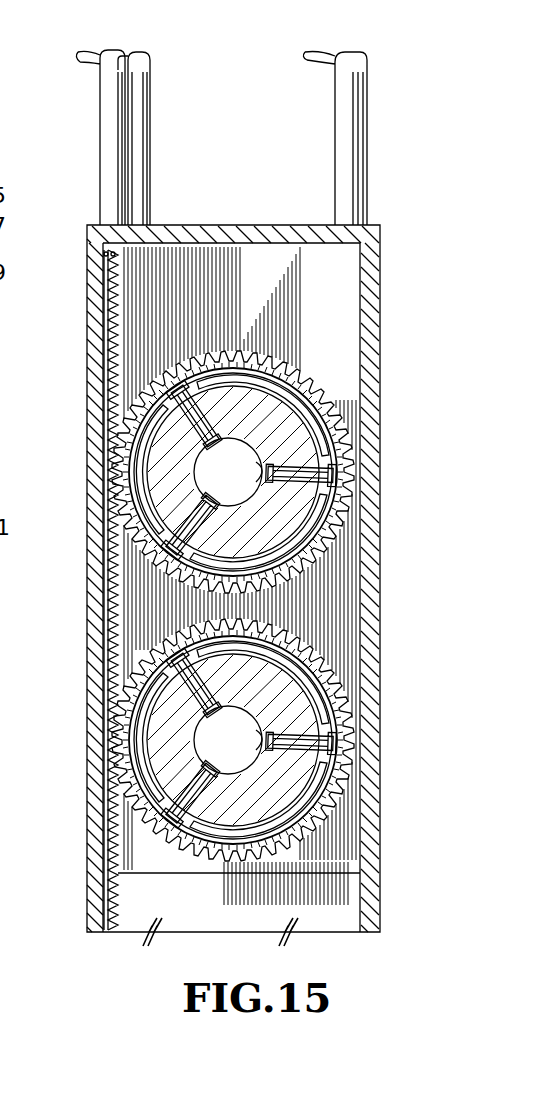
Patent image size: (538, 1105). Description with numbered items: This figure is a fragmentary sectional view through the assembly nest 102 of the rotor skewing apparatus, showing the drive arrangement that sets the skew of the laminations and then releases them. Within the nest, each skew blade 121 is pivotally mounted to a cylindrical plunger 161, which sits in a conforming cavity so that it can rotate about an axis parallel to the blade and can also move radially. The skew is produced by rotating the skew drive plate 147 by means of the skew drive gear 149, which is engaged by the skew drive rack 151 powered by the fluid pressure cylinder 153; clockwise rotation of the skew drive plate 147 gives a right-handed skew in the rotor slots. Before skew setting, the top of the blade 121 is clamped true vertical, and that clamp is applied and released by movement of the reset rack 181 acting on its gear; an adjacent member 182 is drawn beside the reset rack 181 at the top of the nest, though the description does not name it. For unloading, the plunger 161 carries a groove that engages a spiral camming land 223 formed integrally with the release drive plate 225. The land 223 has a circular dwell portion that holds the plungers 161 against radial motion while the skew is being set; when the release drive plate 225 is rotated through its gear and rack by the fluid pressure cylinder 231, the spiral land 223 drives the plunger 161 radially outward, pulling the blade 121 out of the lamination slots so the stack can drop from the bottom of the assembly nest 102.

The assembly nest 102 is at (335, 392).
The skew blade 121 is at (228, 606).
The skew drive plate 147 is at (160, 450).
The skew drive gear 149 is at (225, 352).
The skew drive rack 151 is at (110, 648).
The fluid pressure cylinder 153 is at (100, 127).
The plunger 161 is at (330, 452).
The reset rack 181 is at (140, 283).
The conduit 182 is at (150, 175).
The spiral camming land 223 is at (333, 368).
The release drive plate 225 is at (312, 552).
The fluid pressure cylinder 231 is at (335, 115).